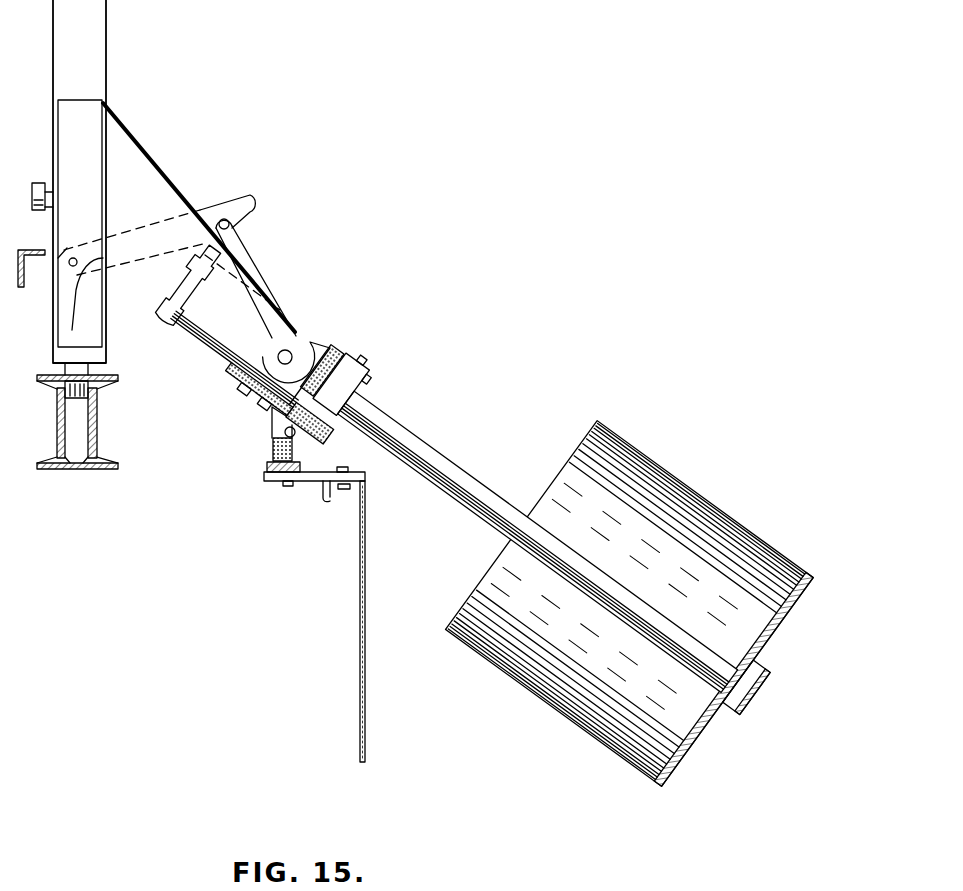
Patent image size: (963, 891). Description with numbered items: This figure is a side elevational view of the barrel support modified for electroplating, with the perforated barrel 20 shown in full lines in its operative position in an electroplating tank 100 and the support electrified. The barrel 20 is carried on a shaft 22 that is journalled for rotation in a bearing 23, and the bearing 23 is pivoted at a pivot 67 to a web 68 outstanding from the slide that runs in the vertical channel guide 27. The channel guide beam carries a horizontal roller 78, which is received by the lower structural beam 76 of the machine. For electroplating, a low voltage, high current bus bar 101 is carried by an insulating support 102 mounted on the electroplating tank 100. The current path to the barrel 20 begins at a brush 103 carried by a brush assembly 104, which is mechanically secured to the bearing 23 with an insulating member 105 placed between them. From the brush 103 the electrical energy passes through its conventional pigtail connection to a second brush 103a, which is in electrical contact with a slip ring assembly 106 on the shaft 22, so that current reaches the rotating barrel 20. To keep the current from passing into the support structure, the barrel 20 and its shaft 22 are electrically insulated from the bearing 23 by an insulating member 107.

The perforated barrel 20 is at (677, 478).
The shaft 22 is at (440, 454).
The bearing 23 is at (330, 346).
The channel guide 27 is at (107, 45).
The pivot 67 is at (289, 351).
The web 68 is at (157, 184).
The lower structural beam 76 is at (67, 457).
The horizontal roller 78 is at (86, 393).
The electroplating tank 100 is at (360, 718).
The bus bar 101 is at (268, 467).
The insulating support 102 is at (303, 478).
The brush 103 is at (272, 460).
The brush 103a is at (312, 437).
The brush assembly 104 is at (277, 422).
The insulating member 105 is at (240, 373).
The slip ring assembly 106 is at (356, 392).
The insulating member 107 is at (350, 352).